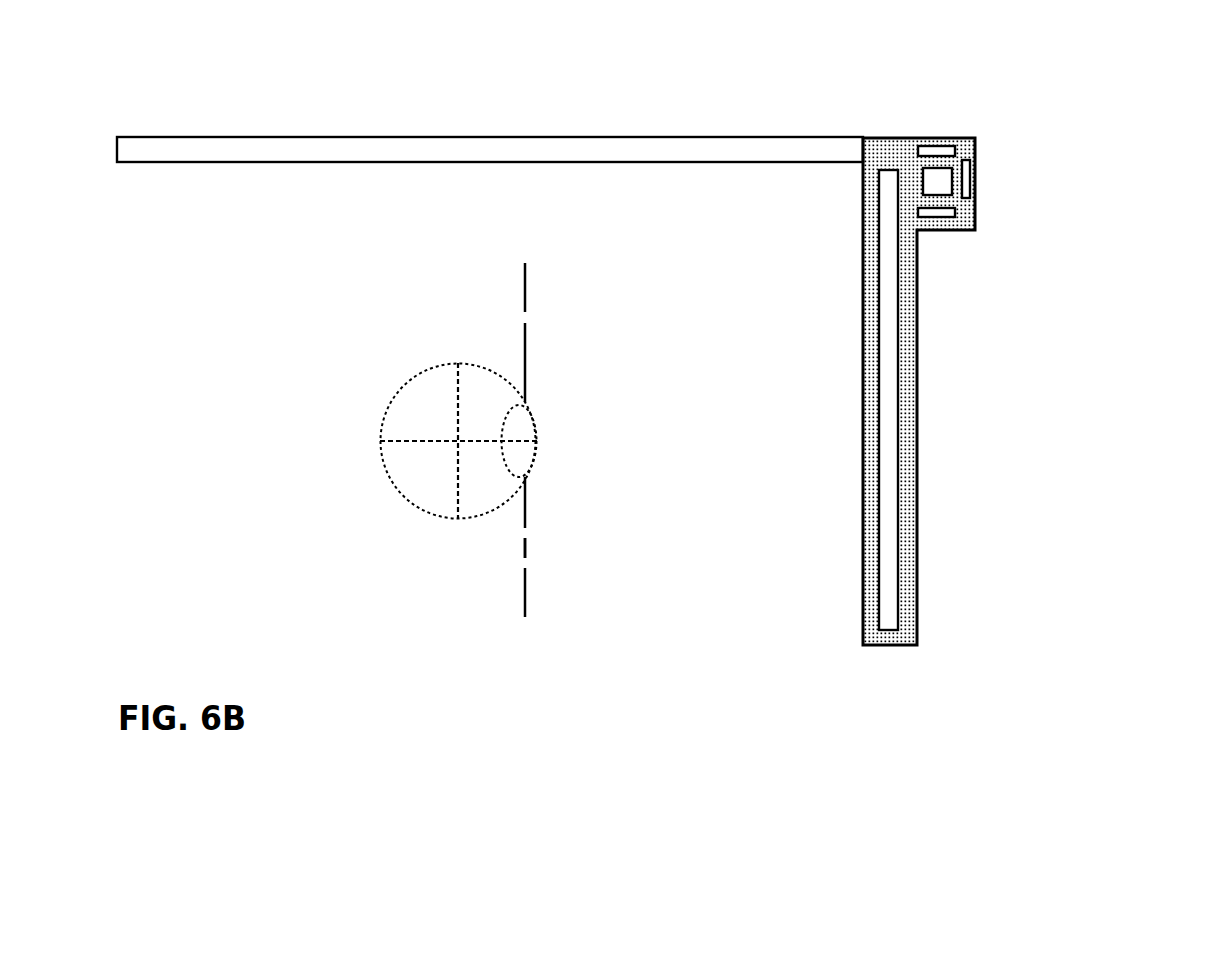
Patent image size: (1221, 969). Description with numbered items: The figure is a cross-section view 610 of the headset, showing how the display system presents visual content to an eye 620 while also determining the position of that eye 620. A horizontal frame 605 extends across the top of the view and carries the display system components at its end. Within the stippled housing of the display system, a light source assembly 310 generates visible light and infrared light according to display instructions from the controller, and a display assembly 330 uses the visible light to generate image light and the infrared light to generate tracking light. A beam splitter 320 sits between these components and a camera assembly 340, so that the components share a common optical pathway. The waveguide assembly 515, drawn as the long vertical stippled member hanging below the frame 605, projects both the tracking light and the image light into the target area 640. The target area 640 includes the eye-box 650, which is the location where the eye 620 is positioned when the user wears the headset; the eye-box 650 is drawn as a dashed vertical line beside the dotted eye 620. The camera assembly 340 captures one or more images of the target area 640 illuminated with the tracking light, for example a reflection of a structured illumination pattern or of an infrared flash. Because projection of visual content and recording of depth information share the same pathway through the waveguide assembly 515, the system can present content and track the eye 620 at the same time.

The cross-section view 610 is at (171, 60).
The frame 605 is at (470, 148).
The camera assembly 340 is at (937, 146).
The beam splitter 320 is at (955, 165).
The display assembly 330 is at (973, 181).
The light source assembly 310 is at (936, 217).
The waveguide assembly 515 is at (898, 590).
The eye 620 is at (420, 375).
The target area 640 is at (524, 556).
The eye-box 650 is at (553, 472).